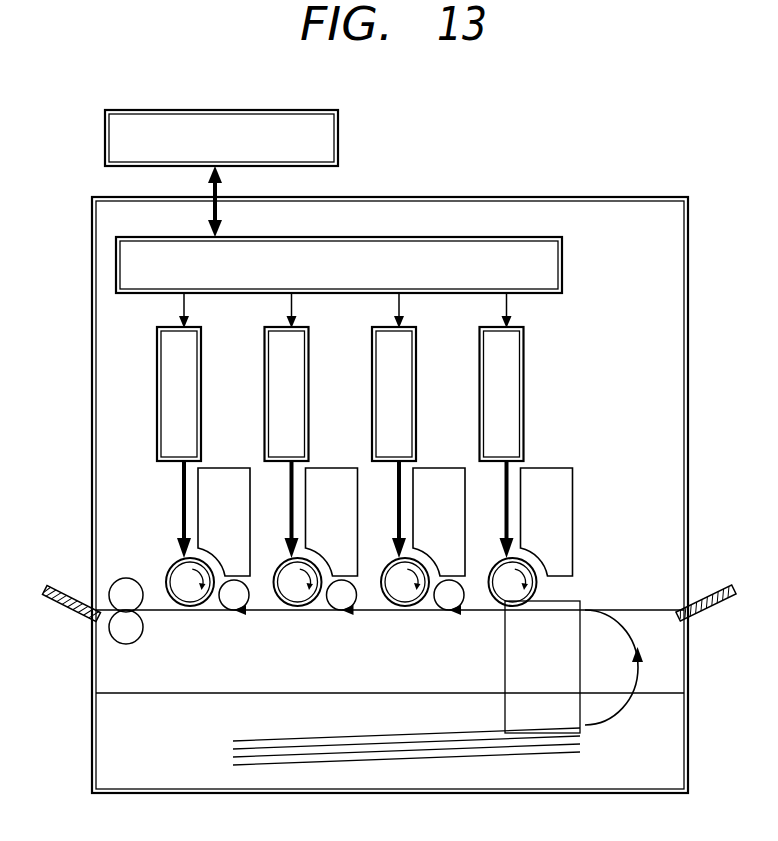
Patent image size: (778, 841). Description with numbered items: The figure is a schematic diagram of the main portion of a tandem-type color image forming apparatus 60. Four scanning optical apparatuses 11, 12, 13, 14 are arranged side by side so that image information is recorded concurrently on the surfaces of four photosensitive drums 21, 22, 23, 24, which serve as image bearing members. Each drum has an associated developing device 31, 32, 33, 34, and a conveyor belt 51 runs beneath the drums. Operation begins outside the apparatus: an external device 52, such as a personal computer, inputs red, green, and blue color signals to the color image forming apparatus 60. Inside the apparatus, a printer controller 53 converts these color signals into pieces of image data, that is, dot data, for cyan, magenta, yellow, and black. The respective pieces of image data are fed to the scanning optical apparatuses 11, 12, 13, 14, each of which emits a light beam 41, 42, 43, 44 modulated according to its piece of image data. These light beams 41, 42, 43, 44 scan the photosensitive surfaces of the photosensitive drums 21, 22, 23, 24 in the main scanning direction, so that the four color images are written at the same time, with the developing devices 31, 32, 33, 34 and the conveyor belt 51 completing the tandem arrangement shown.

The scanning optical apparatus 11 is at (167, 380).
The scanning optical apparatus 12 is at (274, 380).
The scanning optical apparatus 13 is at (382, 380).
The scanning optical apparatus 14 is at (490, 380).
The photosensitive drum 21 is at (192, 593).
The photosensitive drum 22 is at (300, 593).
The photosensitive drum 23 is at (407, 593).
The photosensitive drum 24 is at (514, 593).
The developing device 31 is at (225, 476).
The developing device 32 is at (332, 476).
The developing device 33 is at (440, 476).
The developing device 34 is at (548, 476).
The light beam 41 is at (182, 507).
The light beam 42 is at (292, 527).
The light beam 43 is at (399, 527).
The light beam 44 is at (506, 527).
The conveyor belt 51 is at (629, 630).
The external device 52 is at (340, 134).
The printer controller 53 is at (563, 262).
The color image forming apparatus 60 is at (612, 196).